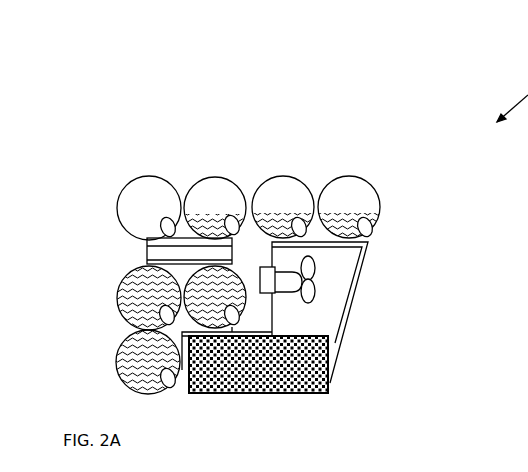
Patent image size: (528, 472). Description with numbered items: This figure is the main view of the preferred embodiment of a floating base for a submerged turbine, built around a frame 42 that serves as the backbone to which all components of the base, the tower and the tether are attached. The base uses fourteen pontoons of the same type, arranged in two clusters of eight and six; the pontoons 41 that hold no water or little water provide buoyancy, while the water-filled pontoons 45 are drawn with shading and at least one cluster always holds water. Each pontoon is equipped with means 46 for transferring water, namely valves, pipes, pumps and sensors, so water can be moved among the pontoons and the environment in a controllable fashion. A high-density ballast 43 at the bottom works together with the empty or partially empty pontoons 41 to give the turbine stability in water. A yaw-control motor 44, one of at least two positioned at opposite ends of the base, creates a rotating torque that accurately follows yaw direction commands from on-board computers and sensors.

The pontoons 41 is at (340, 170).
The frame 42 is at (360, 270).
The high-density ballast 43 is at (293, 378).
The yaw-control motors 44 is at (307, 290).
The pontoons filled with water 45 is at (168, 376).
The means for transferring water 46 is at (162, 315).